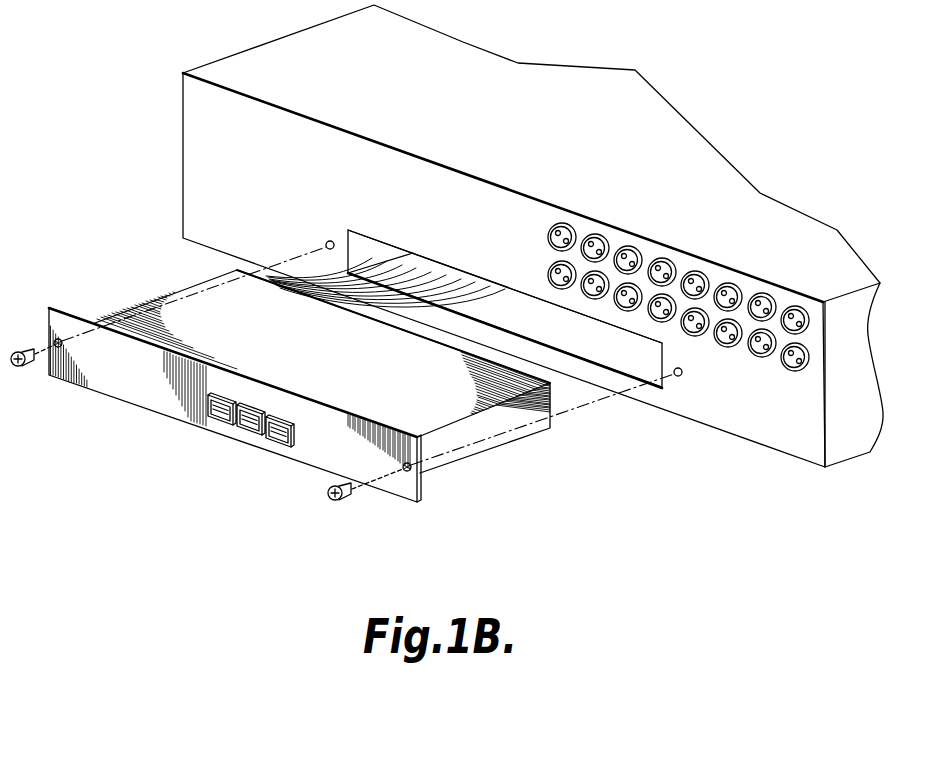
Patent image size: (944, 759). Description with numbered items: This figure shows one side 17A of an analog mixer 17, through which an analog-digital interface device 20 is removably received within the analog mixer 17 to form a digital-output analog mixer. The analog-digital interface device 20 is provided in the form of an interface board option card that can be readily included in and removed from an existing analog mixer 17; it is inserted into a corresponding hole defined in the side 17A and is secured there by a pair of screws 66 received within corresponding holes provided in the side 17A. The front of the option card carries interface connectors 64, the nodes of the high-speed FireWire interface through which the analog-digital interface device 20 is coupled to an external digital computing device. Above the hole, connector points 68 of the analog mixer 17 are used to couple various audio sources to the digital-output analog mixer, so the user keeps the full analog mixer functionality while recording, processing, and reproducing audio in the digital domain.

The analog mixer 17 is at (851, 443).
The side of the analog mixer 17A is at (735, 410).
The analog-digital interface device 20 is at (198, 292).
The interface connectors 64 is at (218, 418).
The screws 66 is at (18, 366).
The connector points 68 is at (823, 285).